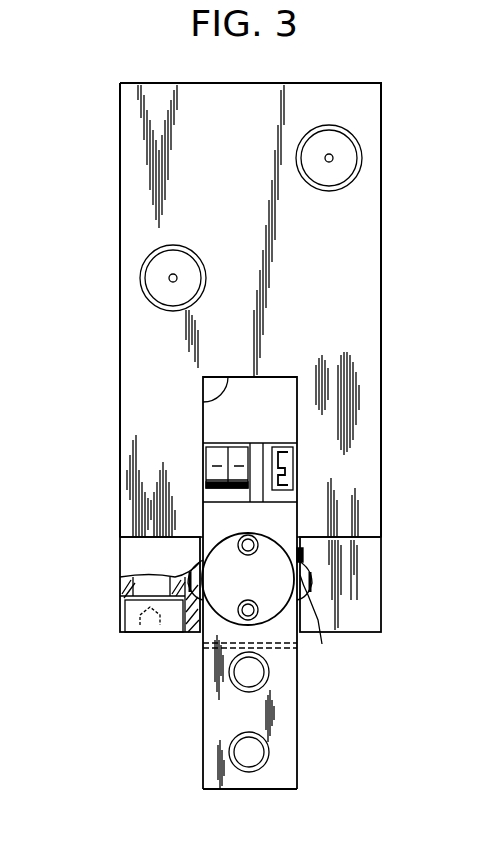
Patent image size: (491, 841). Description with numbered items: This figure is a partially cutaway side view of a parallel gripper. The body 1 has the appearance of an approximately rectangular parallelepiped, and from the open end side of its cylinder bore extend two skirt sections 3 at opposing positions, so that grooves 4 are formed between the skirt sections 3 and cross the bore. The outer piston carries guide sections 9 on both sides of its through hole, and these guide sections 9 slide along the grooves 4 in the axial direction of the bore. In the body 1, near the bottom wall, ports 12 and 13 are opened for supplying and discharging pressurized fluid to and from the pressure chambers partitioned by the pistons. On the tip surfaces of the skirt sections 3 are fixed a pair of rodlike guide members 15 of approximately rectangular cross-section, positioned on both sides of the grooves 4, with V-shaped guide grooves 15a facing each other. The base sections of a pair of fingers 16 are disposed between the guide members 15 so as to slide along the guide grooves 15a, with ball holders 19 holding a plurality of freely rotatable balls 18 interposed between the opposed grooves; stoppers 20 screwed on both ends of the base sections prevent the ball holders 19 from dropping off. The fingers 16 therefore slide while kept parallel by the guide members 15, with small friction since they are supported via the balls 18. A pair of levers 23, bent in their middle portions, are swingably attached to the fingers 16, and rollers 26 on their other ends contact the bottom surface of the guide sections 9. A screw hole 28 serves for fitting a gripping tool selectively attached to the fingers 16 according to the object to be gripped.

The body 1 is at (330, 90).
The skirt sections 3 is at (127, 411).
The grooves 4 is at (228, 400).
The guide sections 9 is at (275, 403).
The port 12 is at (152, 272).
The port 13 is at (345, 152).
The guide members 15 is at (127, 562).
The guide grooves 15a is at (335, 624).
The fingers 16 is at (215, 728).
The balls 18 is at (303, 568).
The ball holders 19 is at (302, 556).
The stoppers 20 is at (240, 595).
The levers 23 is at (258, 495).
The rollers 26 is at (222, 458).
The screw hole 28 is at (252, 755).